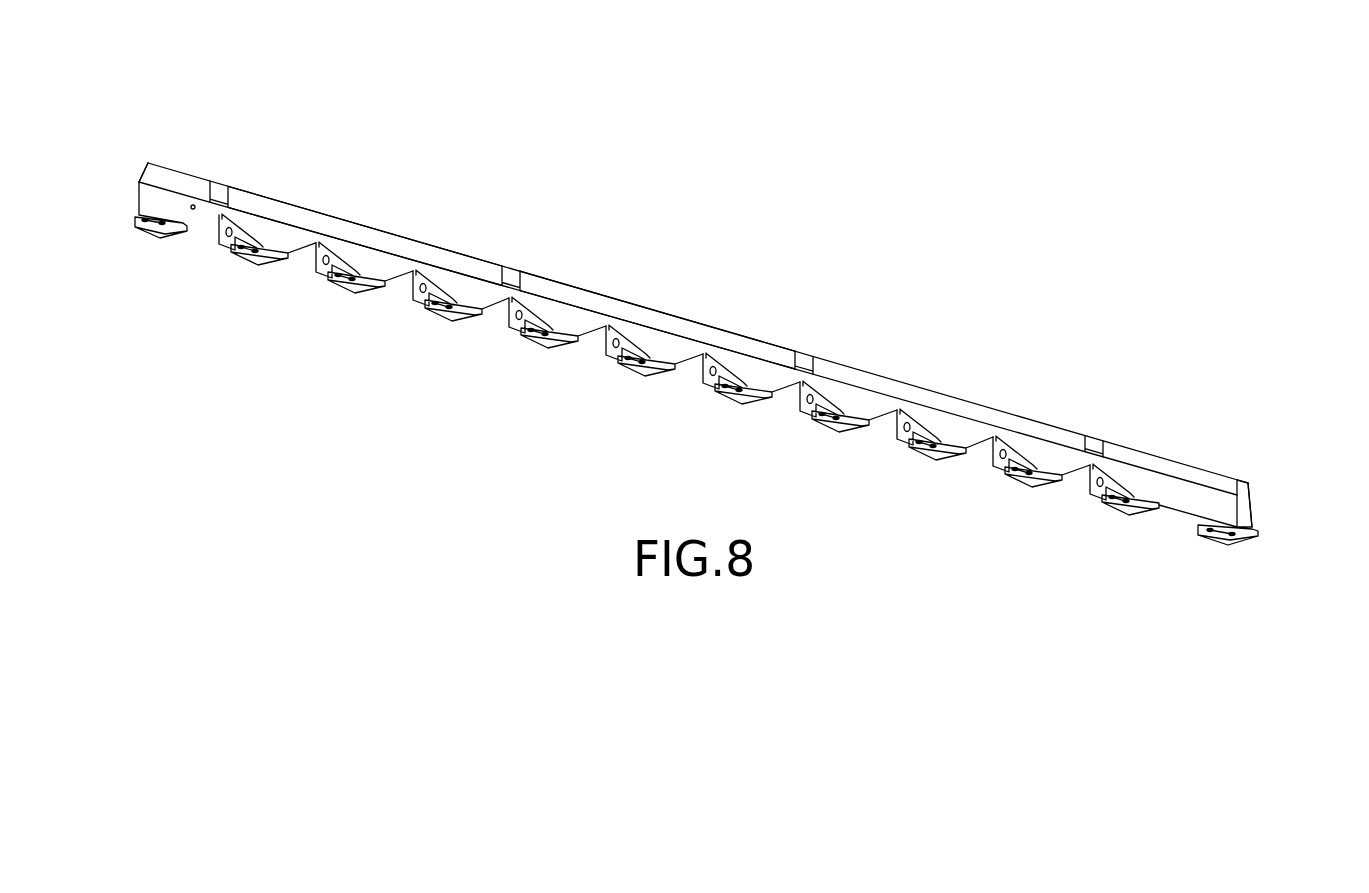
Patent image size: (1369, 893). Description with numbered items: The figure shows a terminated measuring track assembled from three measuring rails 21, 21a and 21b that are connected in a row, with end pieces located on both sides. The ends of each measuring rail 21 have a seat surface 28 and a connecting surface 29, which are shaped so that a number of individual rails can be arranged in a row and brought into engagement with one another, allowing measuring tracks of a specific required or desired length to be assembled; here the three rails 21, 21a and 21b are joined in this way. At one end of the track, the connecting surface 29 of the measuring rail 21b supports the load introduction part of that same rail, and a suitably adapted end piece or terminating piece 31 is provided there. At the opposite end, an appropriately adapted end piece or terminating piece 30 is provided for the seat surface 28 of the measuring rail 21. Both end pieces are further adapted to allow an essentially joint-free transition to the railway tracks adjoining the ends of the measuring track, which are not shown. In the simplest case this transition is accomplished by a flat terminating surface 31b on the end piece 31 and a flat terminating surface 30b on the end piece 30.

The measuring rail 21 is at (1010, 386).
The measuring rail 21a is at (728, 300).
The measuring rail 21b is at (420, 212).
The seat surface 28 is at (1100, 468).
The connecting surface 29 is at (238, 193).
The end piece 30 is at (1216, 482).
The flat terminating surface 30b is at (1268, 497).
The end piece 31 is at (188, 140).
The flat terminating surface 31b is at (147, 172).